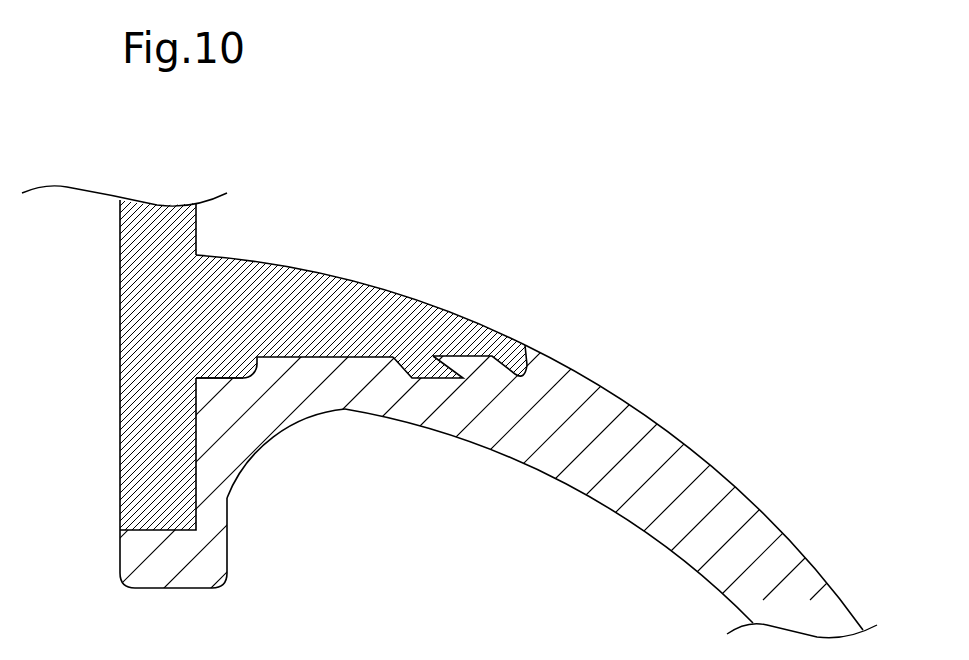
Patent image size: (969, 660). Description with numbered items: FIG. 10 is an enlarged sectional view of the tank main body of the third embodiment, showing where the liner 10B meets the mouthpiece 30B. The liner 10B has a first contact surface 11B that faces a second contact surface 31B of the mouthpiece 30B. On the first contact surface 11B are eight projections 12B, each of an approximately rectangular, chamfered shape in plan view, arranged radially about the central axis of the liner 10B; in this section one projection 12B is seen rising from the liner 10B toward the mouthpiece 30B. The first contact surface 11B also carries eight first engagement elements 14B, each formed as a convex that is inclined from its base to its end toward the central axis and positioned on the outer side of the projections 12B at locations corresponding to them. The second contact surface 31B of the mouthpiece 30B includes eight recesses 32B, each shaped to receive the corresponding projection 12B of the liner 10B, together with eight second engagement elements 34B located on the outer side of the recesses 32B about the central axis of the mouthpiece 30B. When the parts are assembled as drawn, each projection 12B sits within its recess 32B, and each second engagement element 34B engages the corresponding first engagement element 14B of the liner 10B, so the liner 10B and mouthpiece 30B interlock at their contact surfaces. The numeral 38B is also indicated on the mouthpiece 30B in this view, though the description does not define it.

The liner 10B is at (688, 425).
The first contact surface 11B is at (256, 372).
The projection 12B is at (312, 363).
The first engagement element 14B is at (477, 372).
The mouthpiece 30B is at (302, 237).
The second contact surface 31B is at (207, 372).
The recess 32B is at (373, 357).
The second engagement element 34B is at (468, 355).
The design surface 38B is at (310, 295).